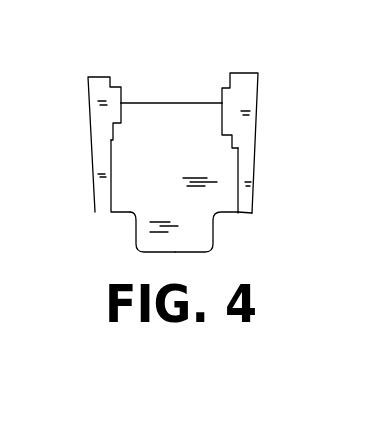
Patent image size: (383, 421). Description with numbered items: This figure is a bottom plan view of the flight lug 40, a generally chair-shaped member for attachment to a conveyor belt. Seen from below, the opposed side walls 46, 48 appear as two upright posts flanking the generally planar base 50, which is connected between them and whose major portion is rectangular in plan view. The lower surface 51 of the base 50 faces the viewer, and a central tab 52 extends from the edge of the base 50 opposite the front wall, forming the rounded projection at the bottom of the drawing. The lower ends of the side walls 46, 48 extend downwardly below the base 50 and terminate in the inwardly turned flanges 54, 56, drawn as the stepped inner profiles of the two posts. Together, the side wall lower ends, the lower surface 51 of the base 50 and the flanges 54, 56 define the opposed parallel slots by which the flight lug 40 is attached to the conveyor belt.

The flight lug 40 is at (173, 130).
The side wall 46 is at (258, 150).
The side wall 48 is at (88, 162).
The base 50 is at (171, 107).
The lower surface of the base 51 is at (142, 182).
The central tab 52 is at (198, 237).
The inwardly turned flange 54 is at (222, 112).
The inwardly turned flange 56 is at (115, 123).